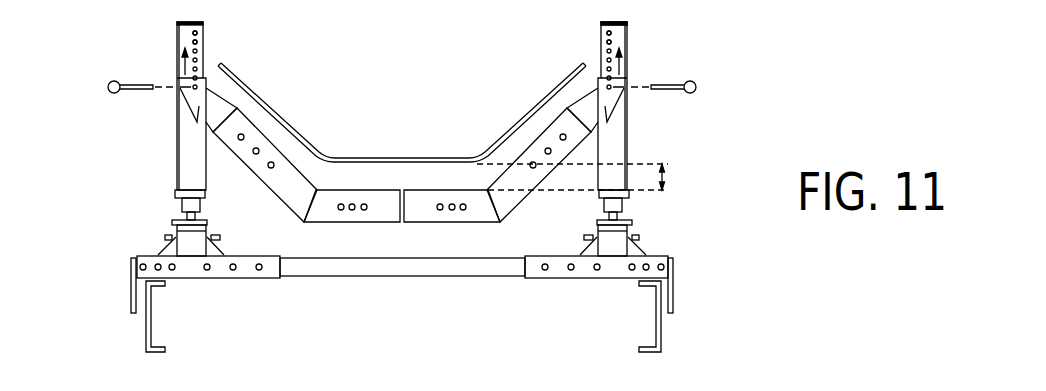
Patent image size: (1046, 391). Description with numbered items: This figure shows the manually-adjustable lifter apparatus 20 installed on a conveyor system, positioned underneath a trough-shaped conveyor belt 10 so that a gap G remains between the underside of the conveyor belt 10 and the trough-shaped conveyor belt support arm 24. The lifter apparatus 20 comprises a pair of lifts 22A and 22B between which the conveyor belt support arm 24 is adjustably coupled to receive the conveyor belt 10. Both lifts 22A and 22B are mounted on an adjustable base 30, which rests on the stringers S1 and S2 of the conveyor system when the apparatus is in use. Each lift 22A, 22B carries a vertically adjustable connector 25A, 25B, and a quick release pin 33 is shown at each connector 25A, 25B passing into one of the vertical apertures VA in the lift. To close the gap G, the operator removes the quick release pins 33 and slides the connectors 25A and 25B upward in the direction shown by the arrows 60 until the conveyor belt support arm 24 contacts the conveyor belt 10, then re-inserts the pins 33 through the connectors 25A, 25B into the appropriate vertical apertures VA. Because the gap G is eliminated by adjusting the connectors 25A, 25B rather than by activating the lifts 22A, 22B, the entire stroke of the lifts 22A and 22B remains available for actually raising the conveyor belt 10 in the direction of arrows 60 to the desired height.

The conveyor belt 10 is at (406, 150).
The adjustable lifter apparatus 20 is at (664, 33).
The lift 22A is at (168, 147).
The lift 22B is at (641, 137).
The conveyor belt support arm 24 is at (371, 238).
The connector 25A is at (197, 110).
The connector 25B is at (612, 100).
The adjustable base 30 is at (398, 298).
The quick release pin 33 is at (108, 83).
The arrow 60 is at (182, 71).
The vertical apertures VA is at (198, 41).
The gap G is at (667, 175).
The stringer S1 is at (146, 328).
The stringer S2 is at (661, 330).